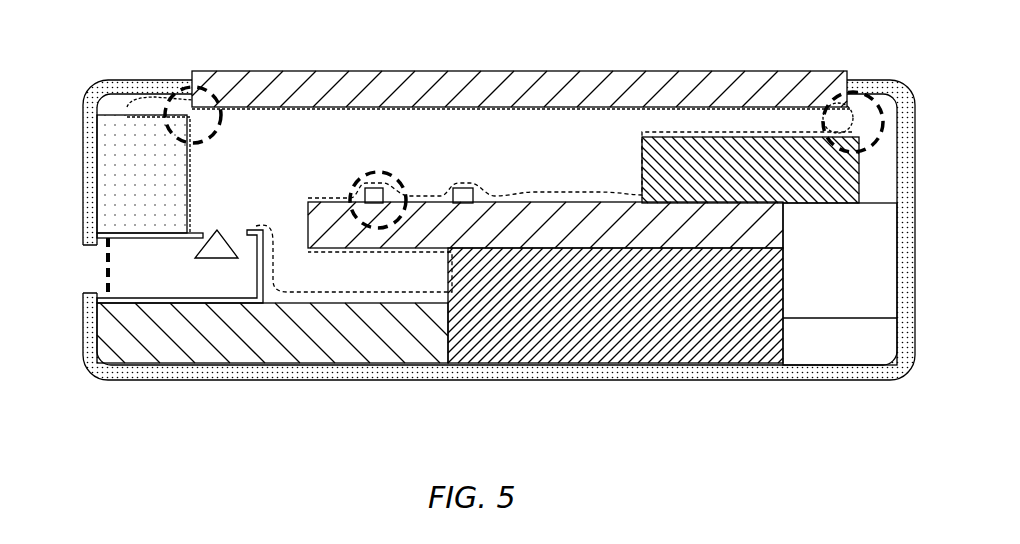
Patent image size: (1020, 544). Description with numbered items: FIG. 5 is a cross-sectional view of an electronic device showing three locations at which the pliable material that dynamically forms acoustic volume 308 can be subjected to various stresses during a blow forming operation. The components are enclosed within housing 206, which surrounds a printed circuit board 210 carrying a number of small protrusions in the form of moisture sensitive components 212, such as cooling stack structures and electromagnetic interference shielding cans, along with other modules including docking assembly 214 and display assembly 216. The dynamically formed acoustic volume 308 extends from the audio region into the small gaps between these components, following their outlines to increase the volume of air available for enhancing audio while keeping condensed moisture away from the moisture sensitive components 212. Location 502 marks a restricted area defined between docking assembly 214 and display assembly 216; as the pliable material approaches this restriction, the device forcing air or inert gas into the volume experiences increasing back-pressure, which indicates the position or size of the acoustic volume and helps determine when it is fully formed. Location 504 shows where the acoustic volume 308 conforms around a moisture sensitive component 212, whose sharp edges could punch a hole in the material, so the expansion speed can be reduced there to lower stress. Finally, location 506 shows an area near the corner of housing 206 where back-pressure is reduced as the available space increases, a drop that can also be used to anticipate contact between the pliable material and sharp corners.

The housing 206 is at (97, 80).
The printed circuit board 210 is at (482, 235).
The moisture sensitive components 212 is at (397, 188).
The docking assembly 214 is at (157, 184).
The display assembly 216 is at (305, 99).
The dynamically formed acoustic volume 308 is at (265, 149).
The location 502 is at (210, 88).
The location 504 is at (397, 178).
The location 506 is at (867, 93).